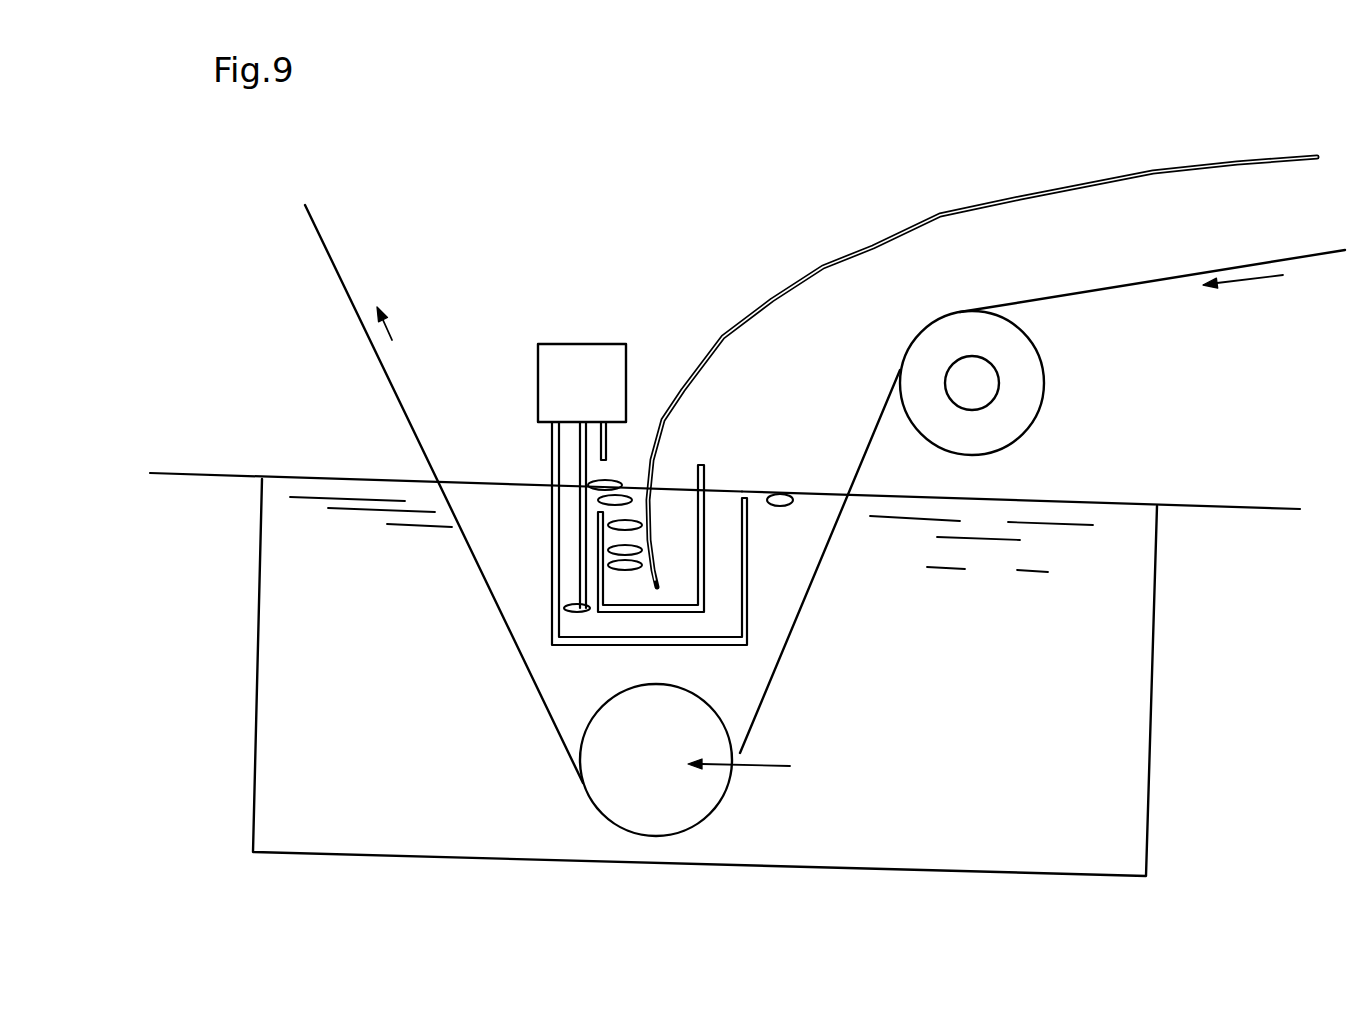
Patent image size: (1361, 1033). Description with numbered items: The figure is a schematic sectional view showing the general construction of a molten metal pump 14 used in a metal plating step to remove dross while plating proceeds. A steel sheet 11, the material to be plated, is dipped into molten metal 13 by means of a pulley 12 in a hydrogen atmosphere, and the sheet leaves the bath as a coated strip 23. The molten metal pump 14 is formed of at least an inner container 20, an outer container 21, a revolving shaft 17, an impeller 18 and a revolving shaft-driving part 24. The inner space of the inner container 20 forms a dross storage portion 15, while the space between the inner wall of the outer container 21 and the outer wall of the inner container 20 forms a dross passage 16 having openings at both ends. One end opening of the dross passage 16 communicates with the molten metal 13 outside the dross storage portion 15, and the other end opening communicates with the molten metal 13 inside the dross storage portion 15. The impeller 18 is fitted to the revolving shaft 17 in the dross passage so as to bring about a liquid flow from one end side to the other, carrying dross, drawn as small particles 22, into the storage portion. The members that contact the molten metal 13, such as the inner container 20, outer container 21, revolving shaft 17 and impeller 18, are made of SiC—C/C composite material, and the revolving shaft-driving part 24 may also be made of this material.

The steel sheet 11 is at (1067, 295).
The pulley 12 is at (1045, 373).
The molten metal 13 is at (1121, 503).
The molten metal pump 14 is at (587, 295).
The dross storage portion 15 is at (677, 490).
The dross passage 16 is at (725, 492).
The revolving shaft 17 is at (562, 443).
The impeller 18 is at (567, 607).
The inner container 20 is at (707, 466).
The outer container 21 is at (747, 538).
The bubbles 22 is at (612, 478).
The coated film 23 is at (772, 298).
The revolving shaft-driving part 24 is at (618, 345).